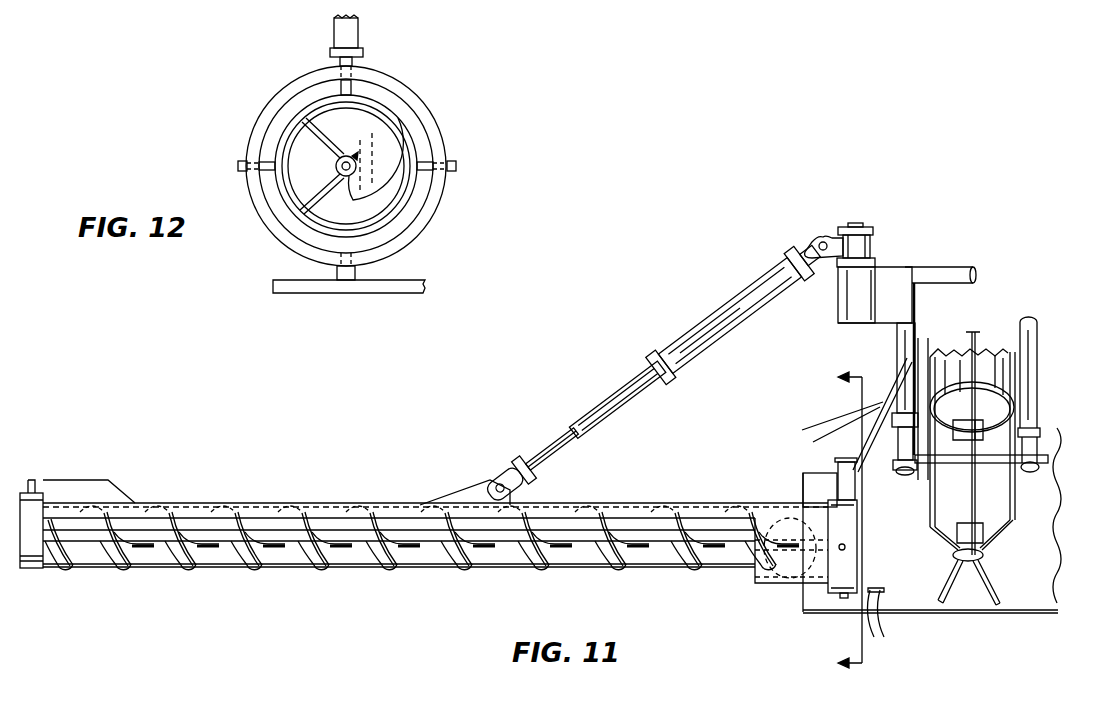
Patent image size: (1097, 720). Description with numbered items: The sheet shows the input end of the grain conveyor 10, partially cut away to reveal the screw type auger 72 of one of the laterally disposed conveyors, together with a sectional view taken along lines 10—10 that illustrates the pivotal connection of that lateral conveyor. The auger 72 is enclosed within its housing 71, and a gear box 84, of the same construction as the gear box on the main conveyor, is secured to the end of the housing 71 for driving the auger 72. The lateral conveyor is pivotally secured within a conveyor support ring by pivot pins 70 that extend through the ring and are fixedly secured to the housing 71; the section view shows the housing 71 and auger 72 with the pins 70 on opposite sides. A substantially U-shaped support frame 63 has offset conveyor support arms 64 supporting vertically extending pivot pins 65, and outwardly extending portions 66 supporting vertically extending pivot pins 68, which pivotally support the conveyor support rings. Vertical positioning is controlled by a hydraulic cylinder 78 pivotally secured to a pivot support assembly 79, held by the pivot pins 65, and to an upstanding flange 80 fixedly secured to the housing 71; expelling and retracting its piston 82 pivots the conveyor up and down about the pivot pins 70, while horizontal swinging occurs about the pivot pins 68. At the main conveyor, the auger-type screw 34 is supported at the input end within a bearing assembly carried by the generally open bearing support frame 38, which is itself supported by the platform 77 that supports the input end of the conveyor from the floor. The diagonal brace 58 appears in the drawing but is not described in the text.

In FIG. 11, the conveyor 10 is at (837, 521).
In FIG. 11, the auger-type screw 34 is at (977, 495).
In FIG. 11, the bearing support frame 38 is at (1002, 585).
In FIG. 11, the diagonal brace 58 is at (857, 452).
In FIG. 11, the U-shaped support frame 63 is at (902, 350).
In FIG. 11, the offset conveyor support arms 64 is at (842, 313).
In FIG. 11, the vertically extending pivot pins 65 is at (857, 223).
In FIG. 11, the outwardly extending portions 66 is at (829, 422).
In FIG. 11, the vertically extending pivot pins 68 is at (803, 490).
In FIG. 12, the vertically extending pivot pins 68 is at (360, 63).
In FIG. 11, the pivot pins 70 is at (848, 547).
In FIG. 12, the pivot pins 70 is at (236, 166).
In FIG. 12, the housing 71 is at (410, 198).
In FIG. 11, the screw type auger 72 is at (196, 556).
In FIG. 12, the screw type auger 72 is at (388, 142).
In FIG. 11, the platform 77 is at (917, 598).
In FIG. 12, the platform 77 is at (330, 283).
In FIG. 11, the hydraulic cylinders 78 is at (738, 302).
In FIG. 11, the pivot support assemblies 79 is at (791, 247).
In FIG. 11, the upstanding flanges 80 is at (486, 480).
In FIG. 11, the pistons 82 is at (597, 412).
In FIG. 11, the gear box 84 is at (33, 493).